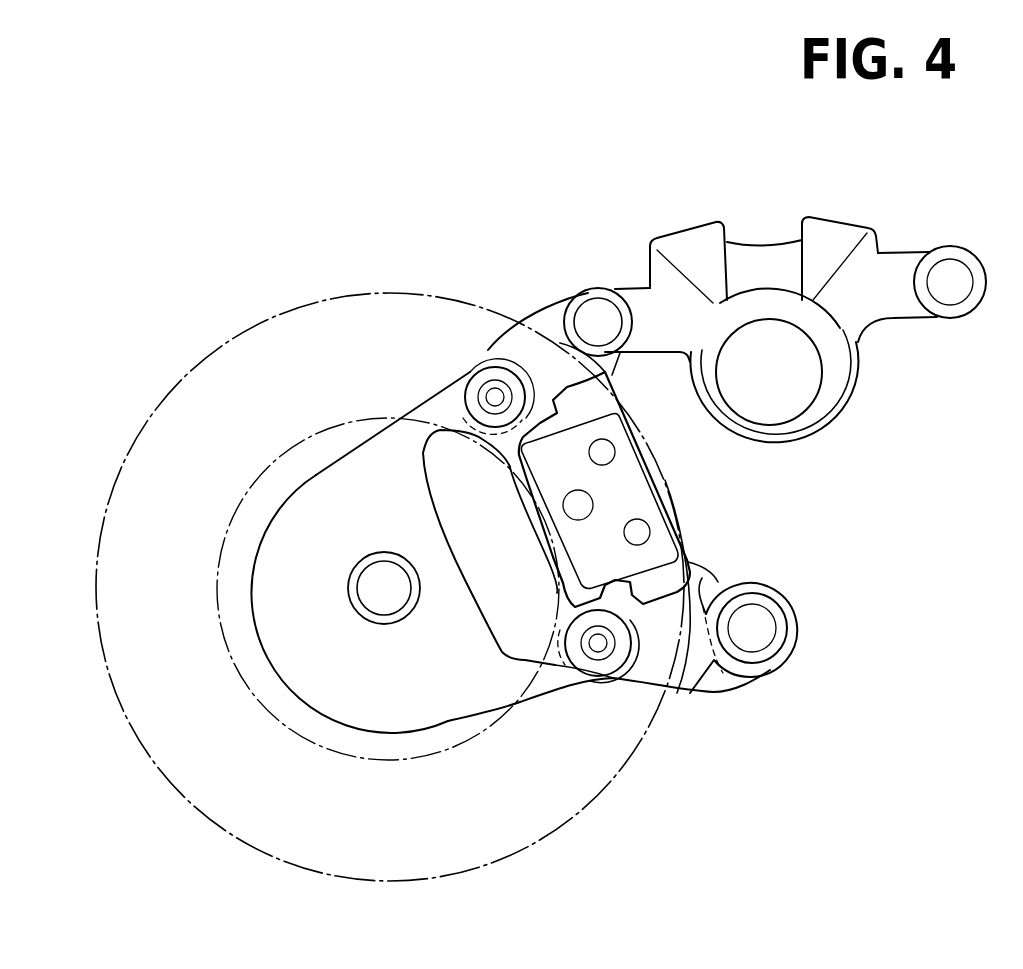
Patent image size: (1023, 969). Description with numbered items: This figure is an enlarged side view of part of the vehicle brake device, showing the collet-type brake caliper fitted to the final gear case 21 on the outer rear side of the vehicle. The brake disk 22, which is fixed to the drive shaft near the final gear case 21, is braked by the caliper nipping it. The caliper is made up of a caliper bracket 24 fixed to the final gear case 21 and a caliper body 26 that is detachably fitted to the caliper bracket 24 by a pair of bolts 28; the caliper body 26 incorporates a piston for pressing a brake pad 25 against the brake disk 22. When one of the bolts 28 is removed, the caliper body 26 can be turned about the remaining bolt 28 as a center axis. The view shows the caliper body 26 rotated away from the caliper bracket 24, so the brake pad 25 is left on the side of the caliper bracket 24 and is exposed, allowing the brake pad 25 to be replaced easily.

The final gear case 21 is at (362, 692).
The brake disk 22 is at (503, 813).
The caliper bracket 24 is at (730, 695).
The brake pad 25 is at (649, 503).
The caliper body 26 is at (749, 289).
The bolts 28 is at (602, 322).